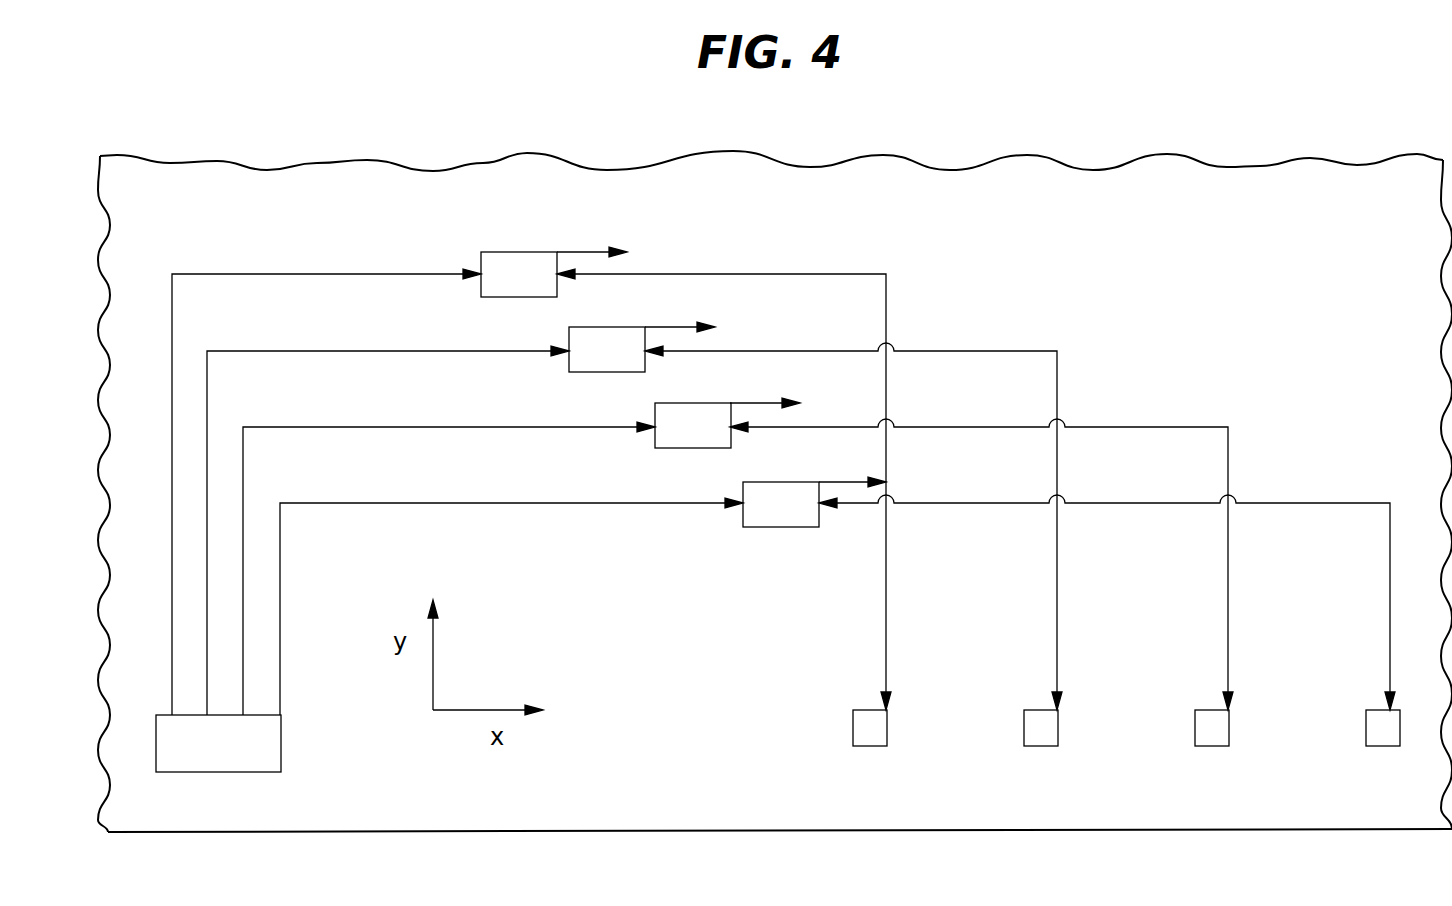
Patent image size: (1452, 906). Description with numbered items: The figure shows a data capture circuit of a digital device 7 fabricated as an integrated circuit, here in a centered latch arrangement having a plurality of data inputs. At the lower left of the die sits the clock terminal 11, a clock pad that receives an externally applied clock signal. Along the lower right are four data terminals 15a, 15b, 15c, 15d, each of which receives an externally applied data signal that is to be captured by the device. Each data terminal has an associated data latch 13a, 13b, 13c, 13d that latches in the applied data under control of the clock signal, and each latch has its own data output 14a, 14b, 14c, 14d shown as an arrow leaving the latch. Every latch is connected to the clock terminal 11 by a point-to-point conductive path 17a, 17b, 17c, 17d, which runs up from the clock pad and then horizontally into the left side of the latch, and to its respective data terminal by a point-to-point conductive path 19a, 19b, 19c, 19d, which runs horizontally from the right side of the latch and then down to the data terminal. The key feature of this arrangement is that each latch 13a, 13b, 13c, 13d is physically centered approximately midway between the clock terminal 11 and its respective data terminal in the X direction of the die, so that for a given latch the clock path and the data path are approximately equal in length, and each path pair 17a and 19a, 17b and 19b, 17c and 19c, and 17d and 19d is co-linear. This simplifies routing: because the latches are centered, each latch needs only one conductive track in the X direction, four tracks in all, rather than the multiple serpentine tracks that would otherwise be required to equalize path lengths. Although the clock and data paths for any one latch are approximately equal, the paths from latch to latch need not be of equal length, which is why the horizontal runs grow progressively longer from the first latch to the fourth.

The digital device 7 is at (1237, 180).
The clock terminal 11 is at (283, 730).
The data latch 13a is at (519, 297).
The data latch 13b is at (605, 372).
The data latch 13c is at (693, 449).
The data latch 13d is at (782, 528).
The data output 14a is at (586, 251).
The data output 14b is at (670, 326).
The data output 14c is at (755, 402).
The data output 14d is at (845, 481).
The data terminal 15a is at (866, 734).
The data terminal 15b is at (1037, 734).
The data terminal 15c is at (1208, 734).
The data terminal 15d is at (1379, 734).
The conductive path 17a is at (386, 274).
The conductive path 17b is at (386, 351).
The conductive path 17c is at (386, 427).
The conductive path 17d is at (386, 503).
The conductive path 19a is at (721, 273).
The conductive path 19b is at (811, 350).
The conductive path 19c is at (929, 426).
The conductive path 19d is at (971, 502).